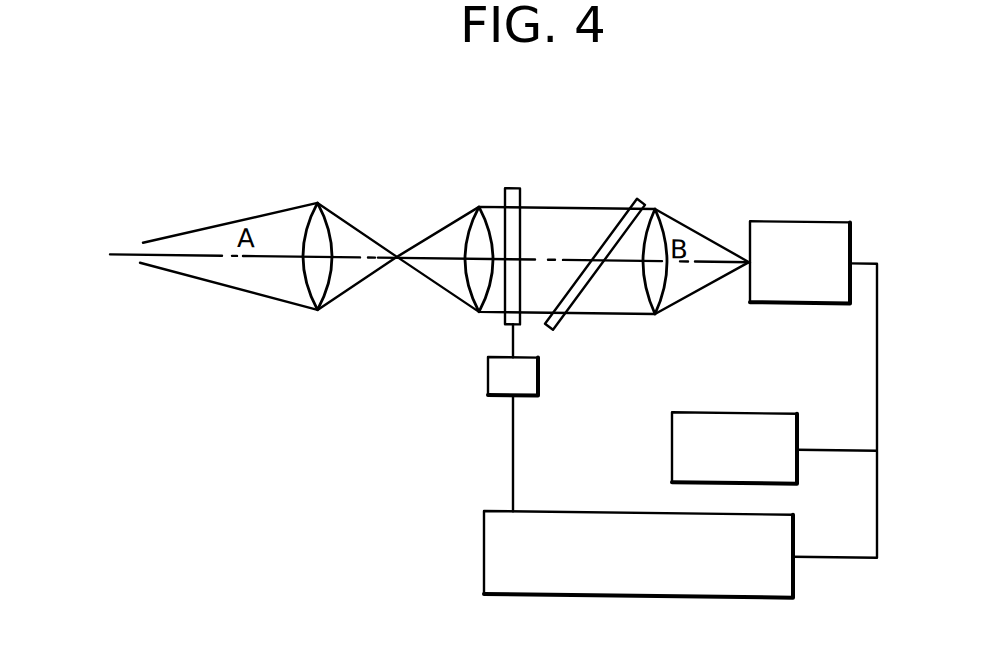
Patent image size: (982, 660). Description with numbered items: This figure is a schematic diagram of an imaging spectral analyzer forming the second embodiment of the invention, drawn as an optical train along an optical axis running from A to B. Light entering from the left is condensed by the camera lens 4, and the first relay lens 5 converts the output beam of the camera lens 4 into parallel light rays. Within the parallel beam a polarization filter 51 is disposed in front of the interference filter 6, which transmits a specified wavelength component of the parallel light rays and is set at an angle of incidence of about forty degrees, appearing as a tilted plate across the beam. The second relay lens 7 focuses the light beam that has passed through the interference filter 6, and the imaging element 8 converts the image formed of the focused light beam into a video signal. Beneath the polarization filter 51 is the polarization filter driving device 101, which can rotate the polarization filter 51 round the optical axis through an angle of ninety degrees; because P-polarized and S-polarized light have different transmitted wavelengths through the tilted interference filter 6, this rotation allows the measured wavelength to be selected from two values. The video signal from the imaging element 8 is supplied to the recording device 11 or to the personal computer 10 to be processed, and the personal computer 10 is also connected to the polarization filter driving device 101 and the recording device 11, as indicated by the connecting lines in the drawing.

The camera lens 4 is at (327, 214).
The first relay lens 5 is at (470, 209).
The polarization filter 51 is at (512, 188).
The interference filter 6 is at (638, 198).
The second relay lens 7 is at (668, 213).
The imaging element 8 is at (793, 218).
The polarization filter driving device 101 is at (538, 372).
The recording device 11 is at (740, 410).
The personal computer 10 is at (796, 531).